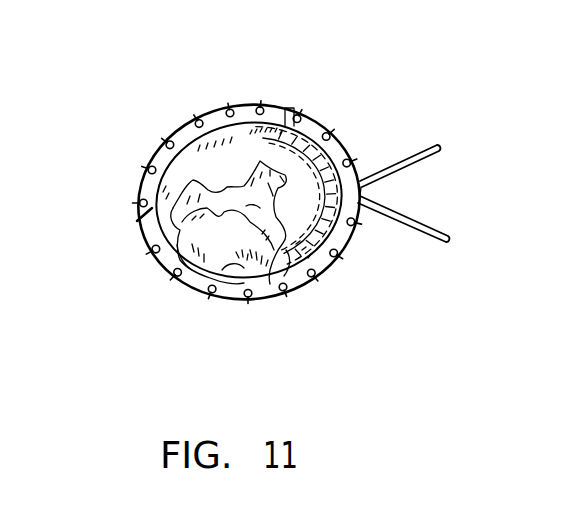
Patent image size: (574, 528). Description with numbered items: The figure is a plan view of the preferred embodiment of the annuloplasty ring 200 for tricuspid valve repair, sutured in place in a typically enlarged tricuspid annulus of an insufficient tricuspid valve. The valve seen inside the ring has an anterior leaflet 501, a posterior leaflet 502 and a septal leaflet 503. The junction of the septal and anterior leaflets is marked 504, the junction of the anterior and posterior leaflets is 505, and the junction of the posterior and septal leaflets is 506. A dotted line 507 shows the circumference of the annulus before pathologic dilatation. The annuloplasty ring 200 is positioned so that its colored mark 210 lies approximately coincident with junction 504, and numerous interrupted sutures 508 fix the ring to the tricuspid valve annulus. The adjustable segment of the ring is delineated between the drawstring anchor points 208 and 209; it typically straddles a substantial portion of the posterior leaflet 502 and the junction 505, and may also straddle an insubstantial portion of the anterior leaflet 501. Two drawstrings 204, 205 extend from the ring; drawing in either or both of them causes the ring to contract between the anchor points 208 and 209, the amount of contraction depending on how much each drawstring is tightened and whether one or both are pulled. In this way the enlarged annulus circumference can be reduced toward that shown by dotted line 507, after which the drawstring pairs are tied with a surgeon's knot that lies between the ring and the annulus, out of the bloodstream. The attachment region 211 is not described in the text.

The annuloplasty ring 200 is at (166, 145).
The drawstring 204 is at (408, 230).
The drawstring 205 is at (420, 147).
The drawstring anchor point 208 is at (306, 290).
The drawstring anchor point 209 is at (287, 107).
The colored mark 210 is at (137, 221).
The rod attachment 211 is at (362, 192).
The anterior leaflet 501 is at (232, 167).
The posterior leaflet 502 is at (310, 226).
The septal leaflet 503 is at (242, 261).
The junction of the septal and anterior leaflets 504 is at (198, 222).
The junction of the anterior and posterior leaflets 505 is at (273, 195).
The junction of the posterior and septal leaflets 506 is at (272, 240).
The dotted line 507 is at (344, 232).
The interrupted sutures 508 is at (229, 108).